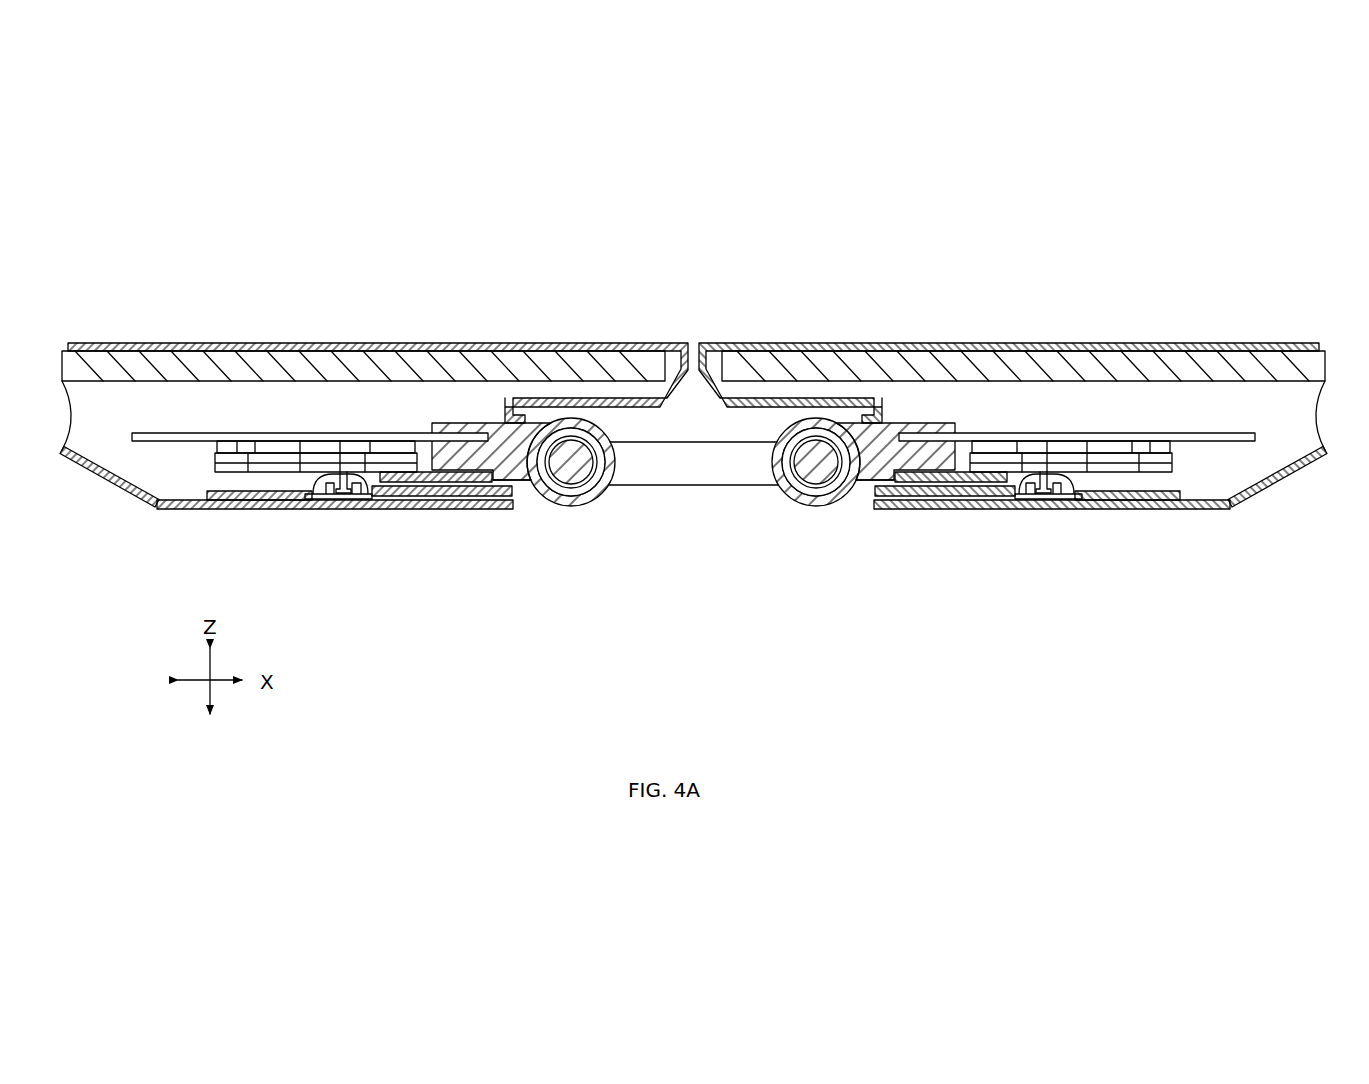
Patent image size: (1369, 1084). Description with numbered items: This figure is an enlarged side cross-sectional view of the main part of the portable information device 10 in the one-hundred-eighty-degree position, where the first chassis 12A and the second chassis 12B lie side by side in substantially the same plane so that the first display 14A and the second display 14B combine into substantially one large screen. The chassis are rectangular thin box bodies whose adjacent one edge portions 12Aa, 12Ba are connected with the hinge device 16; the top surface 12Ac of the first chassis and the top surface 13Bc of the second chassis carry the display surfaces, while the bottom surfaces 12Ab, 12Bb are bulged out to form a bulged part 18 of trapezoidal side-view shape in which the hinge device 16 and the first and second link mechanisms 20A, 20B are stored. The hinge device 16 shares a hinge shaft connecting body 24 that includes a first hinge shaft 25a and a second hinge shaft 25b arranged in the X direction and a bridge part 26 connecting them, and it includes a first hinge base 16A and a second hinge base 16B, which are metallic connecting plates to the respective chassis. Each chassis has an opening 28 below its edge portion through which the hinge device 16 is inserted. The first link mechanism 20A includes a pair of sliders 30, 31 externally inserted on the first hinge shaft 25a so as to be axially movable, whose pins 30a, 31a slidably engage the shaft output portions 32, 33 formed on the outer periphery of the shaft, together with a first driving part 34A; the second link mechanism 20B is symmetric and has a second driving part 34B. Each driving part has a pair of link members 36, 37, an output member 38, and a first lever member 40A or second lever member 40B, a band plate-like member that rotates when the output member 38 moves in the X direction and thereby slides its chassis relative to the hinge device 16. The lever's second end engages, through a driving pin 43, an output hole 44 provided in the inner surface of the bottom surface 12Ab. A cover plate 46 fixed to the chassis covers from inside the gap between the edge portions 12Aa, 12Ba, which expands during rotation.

The portable information device 10 is at (82, 218).
The first chassis 12A is at (55, 484).
The second chassis 12B is at (1334, 484).
The one edge portion 12Aa is at (693, 350).
The one edge portion 12Ba is at (683, 350).
The bottom surface 12Ab is at (215, 510).
The bottom surface 12Bb is at (1172, 510).
The top surface 12Ac is at (693, 344).
The top wall of second housing 13Bc is at (1228, 345).
The first display 14A is at (112, 356).
The second display 14B is at (1276, 356).
The hinge device 16 is at (692, 517).
The hinge shaft connecting body 24 is at (675, 523).
The first hinge base 16A is at (320, 436).
The second hinge base 16B is at (1073, 436).
The bulged part 18 is at (183, 510).
The first link mechanism 20A is at (489, 408).
The second link mechanism 20B is at (897, 406).
The first hinge shaft 25a is at (593, 490).
The second hinge shaft 25b is at (797, 490).
The bridge part 26 is at (707, 474).
The opening 28 is at (512, 414).
The slider 30 is at (695, 529).
The slider 31 is at (443, 482).
The pin 30a is at (691, 557).
The pin 31a is at (513, 500).
The shaft output portion 32 is at (693, 514).
The shaft output portion 33 is at (590, 500).
The first driving part 34A is at (183, 468).
The second driving part 34B is at (1204, 474).
The link member 36 is at (277, 473).
The link member 37 is at (383, 465).
The output member 38 is at (237, 447).
The first lever member 40A is at (343, 470).
The second lever member 40B is at (1043, 470).
The driving pin 43 is at (373, 498).
The output hole 44 is at (305, 500).
The cover plate 46 is at (407, 496).